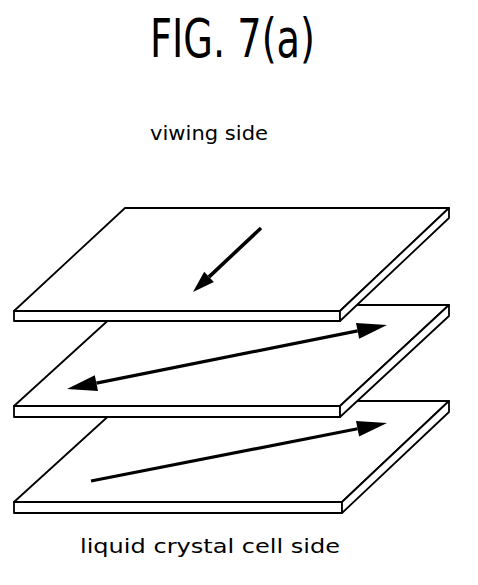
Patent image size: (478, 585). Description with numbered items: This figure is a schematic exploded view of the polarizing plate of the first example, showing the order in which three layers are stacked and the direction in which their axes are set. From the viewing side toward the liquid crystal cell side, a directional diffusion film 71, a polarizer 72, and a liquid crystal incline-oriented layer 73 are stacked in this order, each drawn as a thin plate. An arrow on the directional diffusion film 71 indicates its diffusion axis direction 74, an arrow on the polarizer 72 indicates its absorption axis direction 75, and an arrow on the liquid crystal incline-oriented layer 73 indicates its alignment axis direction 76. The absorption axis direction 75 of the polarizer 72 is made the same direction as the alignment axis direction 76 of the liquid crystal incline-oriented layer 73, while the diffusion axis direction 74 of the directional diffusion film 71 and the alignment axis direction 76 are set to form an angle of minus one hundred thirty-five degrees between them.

The directional diffusion film 71 is at (412, 222).
The polarizer 72 is at (422, 318).
The liquid crystal incline-oriented layer 73 is at (423, 412).
The diffusion axis direction 74 is at (254, 230).
The absorption axis direction 75 is at (110, 378).
The alignment axis direction 76 is at (116, 474).